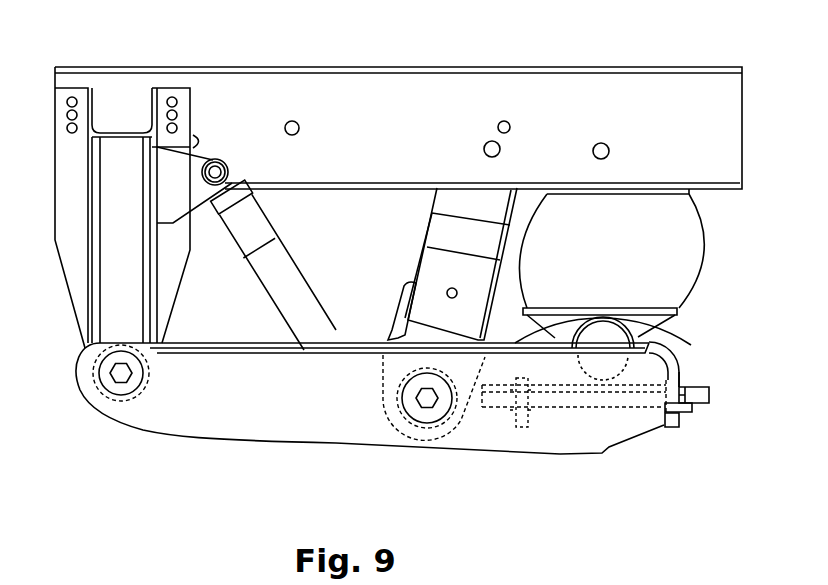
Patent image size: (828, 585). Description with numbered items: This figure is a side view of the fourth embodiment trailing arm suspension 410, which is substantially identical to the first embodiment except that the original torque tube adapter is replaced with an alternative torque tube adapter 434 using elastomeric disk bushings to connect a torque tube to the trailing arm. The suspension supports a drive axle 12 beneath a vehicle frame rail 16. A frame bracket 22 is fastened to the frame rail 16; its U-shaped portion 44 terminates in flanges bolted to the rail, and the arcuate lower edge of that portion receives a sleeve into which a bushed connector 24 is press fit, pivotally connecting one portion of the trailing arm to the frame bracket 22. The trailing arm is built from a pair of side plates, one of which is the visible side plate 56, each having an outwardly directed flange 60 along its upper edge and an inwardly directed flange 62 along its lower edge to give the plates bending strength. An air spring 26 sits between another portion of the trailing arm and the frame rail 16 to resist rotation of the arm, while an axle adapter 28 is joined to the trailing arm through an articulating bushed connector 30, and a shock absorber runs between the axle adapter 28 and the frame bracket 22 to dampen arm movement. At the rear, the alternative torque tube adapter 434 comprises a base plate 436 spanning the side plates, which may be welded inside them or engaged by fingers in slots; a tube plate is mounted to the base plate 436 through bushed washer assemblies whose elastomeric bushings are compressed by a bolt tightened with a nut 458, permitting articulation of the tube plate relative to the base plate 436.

The fourth embodiment trailing arm suspension 410 is at (386, 34).
The vehicle frame rail 16 is at (569, 68).
The frame bracket 22 is at (75, 325).
The drive axle 12 is at (435, 265).
The axle adapter 28 is at (392, 318).
The air spring 26 is at (707, 232).
The U-shaped portion 44 is at (635, 338).
The outwardly directed flange 60 is at (302, 350).
The inwardly directed flange 62 is at (225, 440).
The side plate 56 is at (622, 443).
The alternative torque tube adapter 434 is at (705, 368).
The base plate 436 is at (710, 400).
The nut 458 is at (679, 422).
The bushed connector 30 is at (417, 412).
The bushed connector 24 is at (113, 388).